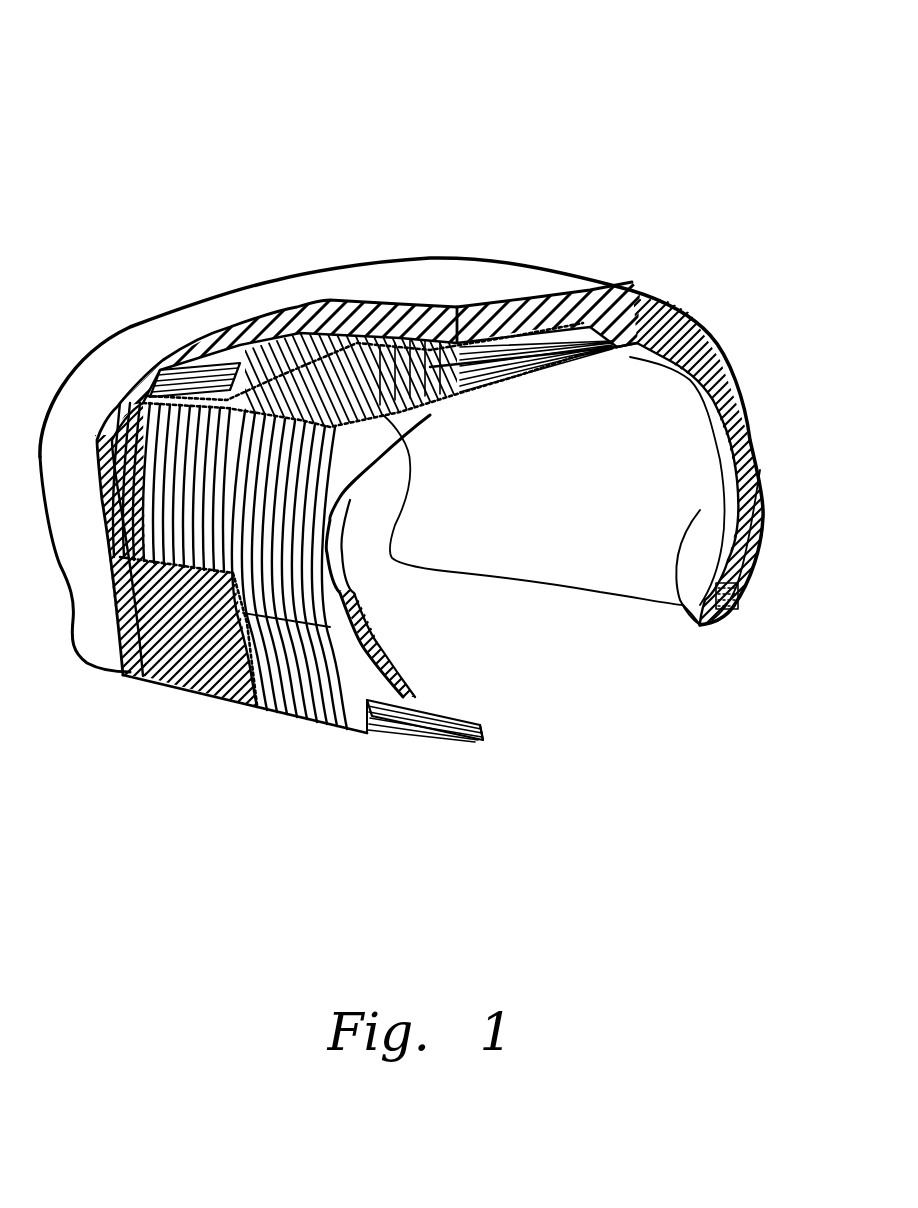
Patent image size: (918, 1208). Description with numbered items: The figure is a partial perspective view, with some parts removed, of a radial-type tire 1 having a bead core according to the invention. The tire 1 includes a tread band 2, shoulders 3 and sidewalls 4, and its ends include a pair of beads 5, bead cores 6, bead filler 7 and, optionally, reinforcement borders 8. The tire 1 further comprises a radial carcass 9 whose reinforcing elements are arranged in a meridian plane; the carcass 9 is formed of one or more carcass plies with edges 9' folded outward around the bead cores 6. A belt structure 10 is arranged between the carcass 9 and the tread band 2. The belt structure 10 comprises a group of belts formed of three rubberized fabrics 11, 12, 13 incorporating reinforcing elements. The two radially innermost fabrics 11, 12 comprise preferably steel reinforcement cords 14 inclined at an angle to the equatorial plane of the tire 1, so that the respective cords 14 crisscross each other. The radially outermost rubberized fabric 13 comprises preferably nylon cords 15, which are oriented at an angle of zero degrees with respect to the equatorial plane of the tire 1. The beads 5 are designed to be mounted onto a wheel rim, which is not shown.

The radial-type tire 1 is at (100, 130).
The tread band 2 is at (500, 280).
The shoulders 3 is at (703, 337).
The sidewalls 4 is at (752, 422).
The beads 5 is at (683, 607).
The bead cores 6 is at (483, 737).
The bead filler 7 is at (363, 730).
The reinforcement borders 8 is at (183, 683).
The radial carcass 9 is at (271, 566).
The carcass ply edges 9' is at (525, 644).
The belt structure 10 is at (342, 375).
The rubberized fabric 11 is at (592, 300).
The rubberized fabric 12 is at (313, 353).
The rubberized fabric 13 is at (247, 353).
The steel reinforcement cords 14 is at (430, 395).
The nylon cords 15 is at (203, 380).